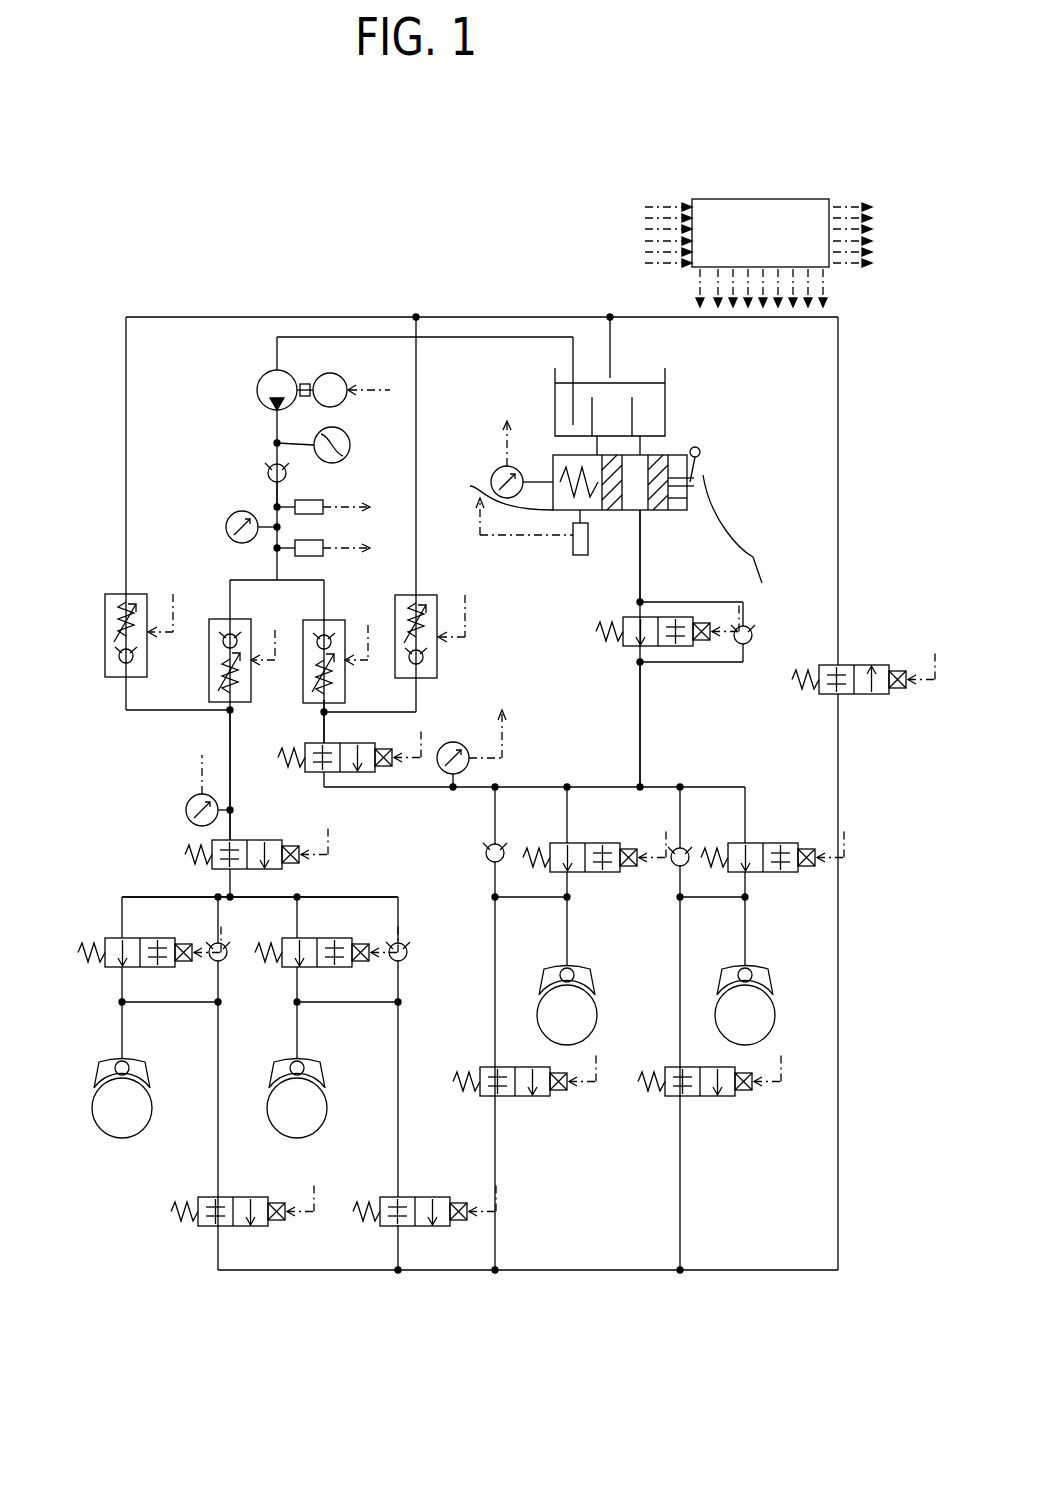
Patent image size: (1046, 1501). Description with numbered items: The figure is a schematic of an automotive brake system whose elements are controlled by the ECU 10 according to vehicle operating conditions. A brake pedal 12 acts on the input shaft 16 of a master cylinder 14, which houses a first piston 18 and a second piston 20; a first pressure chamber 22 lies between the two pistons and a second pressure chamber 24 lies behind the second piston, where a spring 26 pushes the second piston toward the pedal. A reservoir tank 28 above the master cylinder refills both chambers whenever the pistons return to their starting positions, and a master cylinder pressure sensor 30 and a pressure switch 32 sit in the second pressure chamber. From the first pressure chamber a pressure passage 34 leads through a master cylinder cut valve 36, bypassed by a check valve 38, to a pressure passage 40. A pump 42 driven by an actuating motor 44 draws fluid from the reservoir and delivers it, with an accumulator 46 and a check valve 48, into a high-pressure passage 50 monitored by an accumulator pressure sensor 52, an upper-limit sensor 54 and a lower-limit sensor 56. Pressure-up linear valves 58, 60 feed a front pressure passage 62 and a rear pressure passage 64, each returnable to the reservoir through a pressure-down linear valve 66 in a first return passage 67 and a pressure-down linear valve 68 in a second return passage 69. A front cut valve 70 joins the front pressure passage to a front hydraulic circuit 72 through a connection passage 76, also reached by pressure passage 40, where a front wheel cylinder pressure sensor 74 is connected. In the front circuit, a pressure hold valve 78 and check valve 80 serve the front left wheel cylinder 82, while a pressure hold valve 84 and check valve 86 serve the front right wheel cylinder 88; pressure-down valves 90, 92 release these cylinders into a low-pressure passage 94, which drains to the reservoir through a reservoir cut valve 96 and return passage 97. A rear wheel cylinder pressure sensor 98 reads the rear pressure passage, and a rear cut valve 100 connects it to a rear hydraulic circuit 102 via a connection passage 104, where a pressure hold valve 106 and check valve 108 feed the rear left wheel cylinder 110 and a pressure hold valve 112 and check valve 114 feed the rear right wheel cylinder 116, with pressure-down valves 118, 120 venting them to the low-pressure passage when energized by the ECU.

The electronic control unit 10 is at (732, 198).
The brake pedal 12 is at (770, 530).
The master cylinder 14 is at (680, 448).
The input shaft 16 is at (698, 465).
The first piston 18 is at (696, 488).
The second piston 20 is at (608, 510).
The first pressure chamber 22 is at (642, 510).
The second pressure chamber 24 is at (472, 486).
The spring 26 is at (566, 473).
The reservoir tank 28 is at (662, 394).
The master cylinder pressure sensor 30 is at (494, 458).
The pressure switch 32 is at (573, 540).
The pressure passage 34 is at (640, 593).
The master cylinder cut valve 36 is at (628, 648).
The check valve 38 is at (750, 636).
The pressure passage 40 is at (642, 712).
The pump 42 is at (260, 384).
The actuating motor 44 is at (340, 378).
The accumulator 46 is at (348, 442).
The check valve 48 is at (268, 460).
The high-pressure passage 50 is at (276, 490).
The accumulator pressure sensor 52 is at (226, 527).
The upper-limit sensor 54 is at (318, 498).
The lower-limit sensor 56 is at (322, 538).
The pressure-up linear valve 58 is at (350, 620).
The pressure-up linear valve 60 is at (258, 626).
The front pressure passage 62 is at (320, 714).
The rear pressure passage 64 is at (228, 734).
The pressure-down linear valve 66 is at (438, 596).
The first return passage 67 is at (418, 378).
The pressure-down linear valve 68 is at (134, 596).
The second return passage 69 is at (126, 372).
The front cut valve 70 is at (312, 772).
The front hydraulic circuit 72 is at (550, 755).
The front wheel cylinder pressure sensor 74 is at (455, 741).
The connection passage 76 is at (432, 790).
The pressure hold valve 78 is at (760, 844).
The check valve 80 is at (690, 867).
The wheel cylinder 82 is at (760, 976).
The pressure hold valve 84 is at (584, 854).
The check valve 86 is at (506, 852).
The wheel cylinder 88 is at (588, 976).
The pressure-down valve 90 is at (705, 1095).
The pressure-down valve 92 is at (525, 1095).
The low-pressure passage 94 is at (568, 1272).
The reservoir cut valve 96 is at (851, 666).
The return passage 97 is at (838, 372).
The rear wheel cylinder pressure sensor 98 is at (192, 800).
The rear cut valve 100 is at (282, 855).
The rear hydraulic circuit 102 is at (122, 892).
The connection passage 104 is at (342, 895).
The pressure hold valve 106 is at (310, 941).
The check valve 108 is at (408, 945).
The wheel cylinder 110 is at (325, 1067).
The pressure hold valve 112 is at (138, 938).
The check valve 114 is at (222, 945).
The wheel cylinder 116 is at (140, 1067).
The pressure-down valve 118 is at (414, 1195).
The pressure-down valve 120 is at (242, 1195).